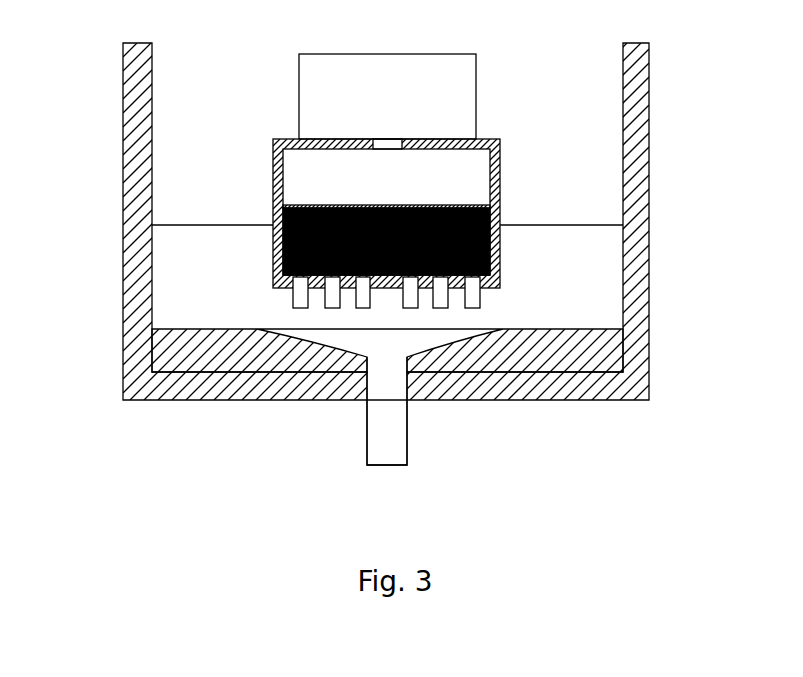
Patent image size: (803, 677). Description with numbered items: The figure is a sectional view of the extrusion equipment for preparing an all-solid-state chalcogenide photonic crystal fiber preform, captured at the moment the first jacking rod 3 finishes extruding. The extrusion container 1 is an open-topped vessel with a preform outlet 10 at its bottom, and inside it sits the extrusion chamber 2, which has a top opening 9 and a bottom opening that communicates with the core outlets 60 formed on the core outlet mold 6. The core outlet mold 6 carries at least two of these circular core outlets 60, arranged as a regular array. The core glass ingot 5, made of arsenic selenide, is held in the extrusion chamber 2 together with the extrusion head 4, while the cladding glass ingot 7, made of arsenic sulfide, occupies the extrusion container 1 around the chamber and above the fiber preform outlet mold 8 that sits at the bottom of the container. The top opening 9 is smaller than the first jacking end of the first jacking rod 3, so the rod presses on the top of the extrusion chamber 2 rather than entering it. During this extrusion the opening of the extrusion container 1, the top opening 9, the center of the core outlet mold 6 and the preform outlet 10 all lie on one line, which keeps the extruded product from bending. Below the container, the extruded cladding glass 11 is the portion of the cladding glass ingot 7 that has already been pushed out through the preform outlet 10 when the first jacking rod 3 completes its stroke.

The extrusion container 1 is at (132, 132).
The extrusion chamber 2 is at (273, 167).
The first jacking rod 3 is at (320, 73).
The extrusion head 4 is at (312, 168).
The core glass ingot 5 is at (468, 208).
The core outlet mold 6 is at (281, 278).
The cladding glass ingot 7 is at (172, 298).
The fiber preform outlet mold 8 is at (557, 357).
The top opening 9 is at (392, 142).
The preform outlet 10 is at (380, 387).
The extruded cladding glass 11 is at (397, 428).
The core outlets 60 is at (478, 302).